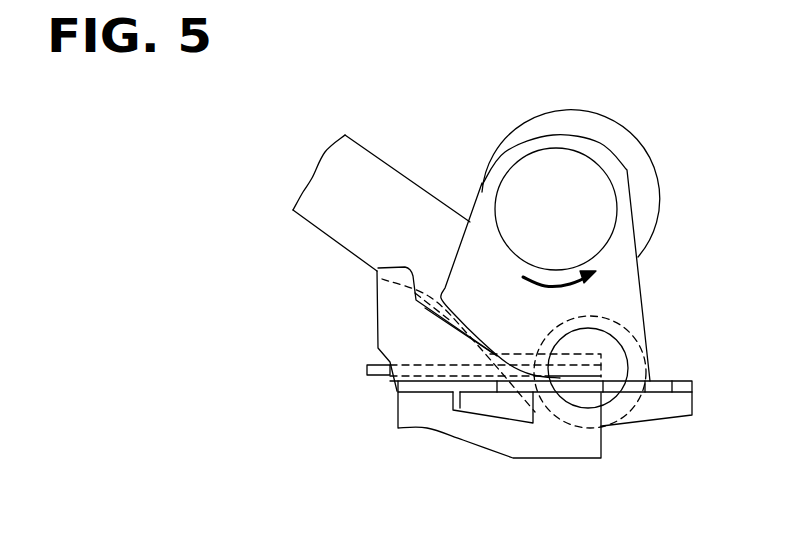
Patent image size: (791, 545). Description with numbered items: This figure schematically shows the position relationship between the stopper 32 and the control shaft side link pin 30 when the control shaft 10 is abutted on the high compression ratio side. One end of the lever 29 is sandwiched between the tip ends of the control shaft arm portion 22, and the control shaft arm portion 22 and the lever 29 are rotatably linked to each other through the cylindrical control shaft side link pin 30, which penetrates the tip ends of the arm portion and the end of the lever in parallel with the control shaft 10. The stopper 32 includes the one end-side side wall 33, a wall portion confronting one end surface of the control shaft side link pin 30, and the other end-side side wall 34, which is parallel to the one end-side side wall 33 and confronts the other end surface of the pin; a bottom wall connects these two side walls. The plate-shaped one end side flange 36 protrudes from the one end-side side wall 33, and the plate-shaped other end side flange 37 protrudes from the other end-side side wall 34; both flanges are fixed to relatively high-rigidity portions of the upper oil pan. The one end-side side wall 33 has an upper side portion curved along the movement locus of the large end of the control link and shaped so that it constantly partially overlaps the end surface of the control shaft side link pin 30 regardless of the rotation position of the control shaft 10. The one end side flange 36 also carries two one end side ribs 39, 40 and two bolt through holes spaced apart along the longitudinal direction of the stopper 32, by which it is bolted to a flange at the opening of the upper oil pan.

The control shaft 10 is at (557, 167).
The control shaft arm portion 22 is at (623, 267).
The lever 29 is at (388, 188).
The control shaft side link pin 30 is at (618, 362).
The stopper 32 is at (405, 441).
The one end-side side wall 33 is at (574, 452).
The other end-side side wall 34 is at (638, 327).
The one end side flange 36 is at (396, 385).
The other end side flange 37 is at (367, 370).
The one end side rib 39 is at (663, 407).
The one end side rib 40 is at (497, 403).